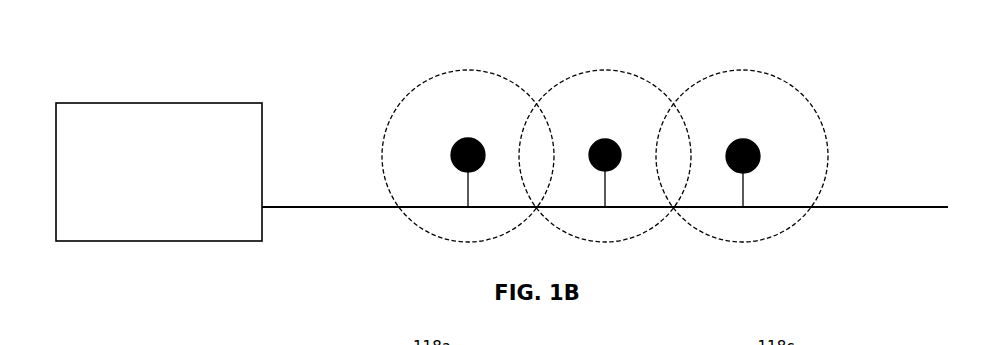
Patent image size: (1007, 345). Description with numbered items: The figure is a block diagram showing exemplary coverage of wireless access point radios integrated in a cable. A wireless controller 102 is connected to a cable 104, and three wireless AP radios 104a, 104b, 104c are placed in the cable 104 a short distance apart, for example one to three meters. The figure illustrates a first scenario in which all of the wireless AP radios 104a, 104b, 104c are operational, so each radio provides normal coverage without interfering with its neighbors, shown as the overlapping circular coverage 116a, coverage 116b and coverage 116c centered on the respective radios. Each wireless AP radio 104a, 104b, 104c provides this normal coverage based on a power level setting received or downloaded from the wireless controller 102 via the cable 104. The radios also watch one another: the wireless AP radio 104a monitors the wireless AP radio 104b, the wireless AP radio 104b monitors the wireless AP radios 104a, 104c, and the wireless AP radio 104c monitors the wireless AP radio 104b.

The wireless controller 102 is at (146, 191).
The cable 104 is at (897, 207).
The wireless AP radio 104a is at (451, 155).
The wireless AP radio 104b is at (590, 155).
The wireless AP radio 104c is at (760, 156).
The coverage 116a is at (452, 71).
The coverage 116b is at (590, 71).
The coverage 116c is at (762, 71).